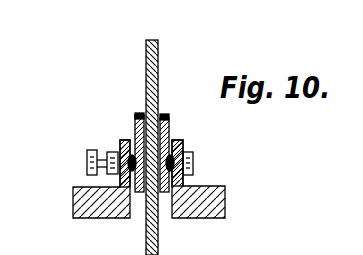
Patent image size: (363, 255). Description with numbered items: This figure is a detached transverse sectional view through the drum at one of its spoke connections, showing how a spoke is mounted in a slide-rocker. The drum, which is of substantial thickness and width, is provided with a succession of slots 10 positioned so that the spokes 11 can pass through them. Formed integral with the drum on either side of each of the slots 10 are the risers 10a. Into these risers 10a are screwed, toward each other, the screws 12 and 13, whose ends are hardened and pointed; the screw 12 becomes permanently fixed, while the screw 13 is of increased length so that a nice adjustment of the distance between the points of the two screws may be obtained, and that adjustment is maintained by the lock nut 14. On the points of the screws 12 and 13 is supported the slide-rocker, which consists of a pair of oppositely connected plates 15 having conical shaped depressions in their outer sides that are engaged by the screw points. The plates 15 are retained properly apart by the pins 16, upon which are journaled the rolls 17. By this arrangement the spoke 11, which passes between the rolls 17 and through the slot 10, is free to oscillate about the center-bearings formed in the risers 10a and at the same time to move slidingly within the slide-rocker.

The slots 10 is at (163, 215).
The risers 10a is at (183, 185).
The spokes 11 is at (158, 58).
The screw 12 is at (181, 142).
The screw 13 is at (100, 152).
The lock nut 14 is at (118, 178).
The plates 15 is at (165, 117).
The pins 16 is at (133, 128).
The rolls 17 is at (158, 118).